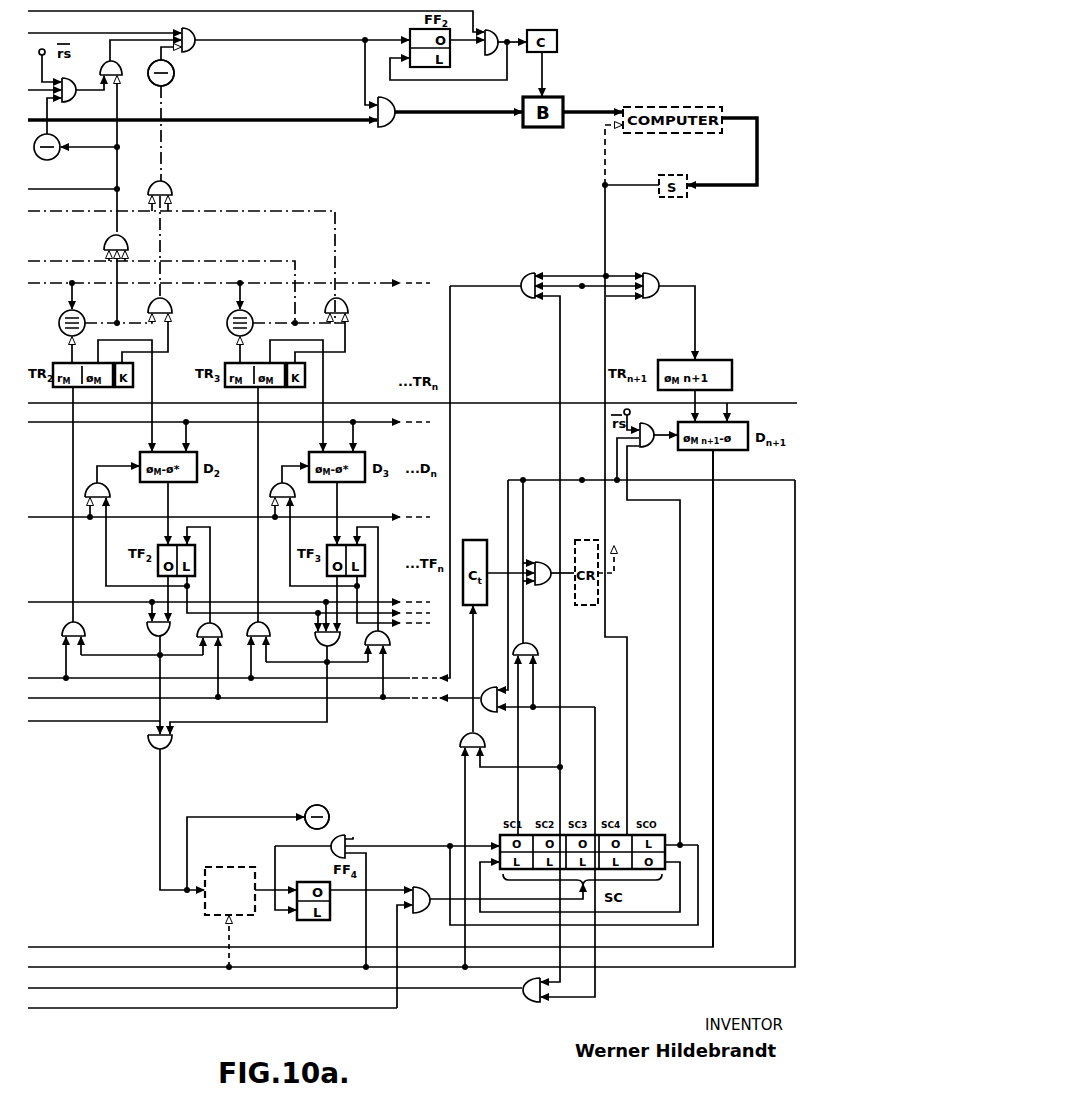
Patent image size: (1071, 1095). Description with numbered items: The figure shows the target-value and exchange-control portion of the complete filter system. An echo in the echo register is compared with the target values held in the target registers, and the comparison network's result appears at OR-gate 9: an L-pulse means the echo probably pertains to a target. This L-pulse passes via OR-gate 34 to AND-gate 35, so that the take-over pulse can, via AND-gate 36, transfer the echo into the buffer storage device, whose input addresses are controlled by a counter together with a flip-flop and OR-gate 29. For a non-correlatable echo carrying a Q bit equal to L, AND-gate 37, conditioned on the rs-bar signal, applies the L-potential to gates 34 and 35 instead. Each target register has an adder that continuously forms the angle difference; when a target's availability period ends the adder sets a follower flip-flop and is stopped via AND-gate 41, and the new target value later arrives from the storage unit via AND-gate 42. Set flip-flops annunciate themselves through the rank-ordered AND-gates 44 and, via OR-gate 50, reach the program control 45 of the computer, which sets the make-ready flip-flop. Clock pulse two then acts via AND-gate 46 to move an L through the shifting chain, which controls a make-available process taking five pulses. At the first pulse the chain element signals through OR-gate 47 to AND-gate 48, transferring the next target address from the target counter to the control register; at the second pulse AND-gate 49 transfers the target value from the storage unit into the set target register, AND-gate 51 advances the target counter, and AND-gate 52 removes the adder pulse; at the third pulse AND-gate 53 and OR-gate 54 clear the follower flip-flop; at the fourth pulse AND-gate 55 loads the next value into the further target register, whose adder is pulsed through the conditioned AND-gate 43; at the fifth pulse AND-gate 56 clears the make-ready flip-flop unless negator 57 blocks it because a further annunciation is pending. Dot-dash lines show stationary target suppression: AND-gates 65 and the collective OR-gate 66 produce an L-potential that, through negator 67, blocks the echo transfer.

The AND-gate 35 is at (192, 29).
The OR-gate 34 is at (118, 62).
The AND-gate 37 is at (74, 99).
The negator 67 is at (172, 80).
The OR-gate 29 is at (497, 31).
The AND-gate 36 is at (392, 124).
The collective OR-gate 66 is at (170, 186).
The OR-gate 9 is at (127, 240).
The AND-gate 65 is at (353, 300).
The AND-gate 49 is at (526, 276).
The AND-gate 55 is at (653, 276).
The AND-gate 43 is at (650, 426).
The AND-gate 41 is at (273, 473).
The AND-gate 42 is at (270, 622).
The AND-gate 44 is at (314, 648).
The OR-gate 54 is at (392, 642).
The OR-gate 50 is at (150, 744).
The AND-gate 48 is at (550, 557).
The OR-gate 47 is at (535, 648).
The AND-gate 53 is at (486, 690).
The AND-gate 51 is at (465, 737).
The negator 57 is at (325, 808).
The AND-gate 56 is at (348, 837).
The program control 45 is at (230, 881).
The AND-gate 46 is at (430, 884).
The AND-gate 52 is at (528, 1001).